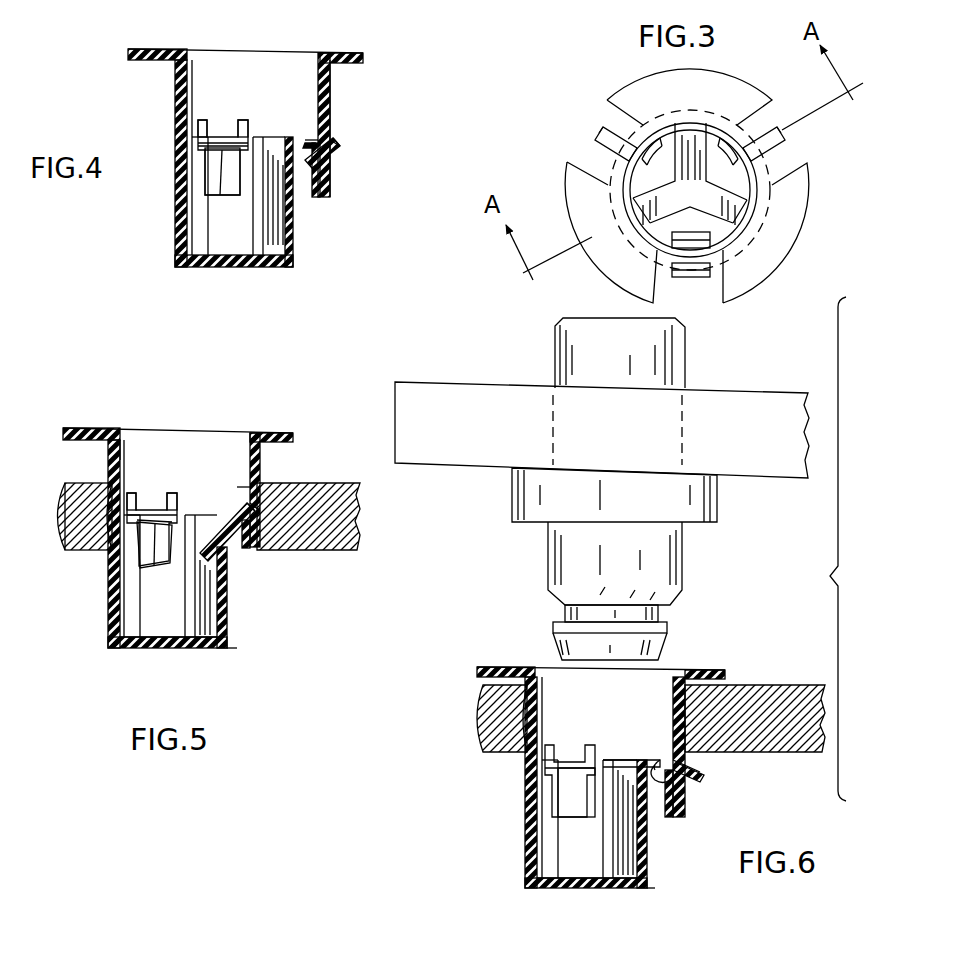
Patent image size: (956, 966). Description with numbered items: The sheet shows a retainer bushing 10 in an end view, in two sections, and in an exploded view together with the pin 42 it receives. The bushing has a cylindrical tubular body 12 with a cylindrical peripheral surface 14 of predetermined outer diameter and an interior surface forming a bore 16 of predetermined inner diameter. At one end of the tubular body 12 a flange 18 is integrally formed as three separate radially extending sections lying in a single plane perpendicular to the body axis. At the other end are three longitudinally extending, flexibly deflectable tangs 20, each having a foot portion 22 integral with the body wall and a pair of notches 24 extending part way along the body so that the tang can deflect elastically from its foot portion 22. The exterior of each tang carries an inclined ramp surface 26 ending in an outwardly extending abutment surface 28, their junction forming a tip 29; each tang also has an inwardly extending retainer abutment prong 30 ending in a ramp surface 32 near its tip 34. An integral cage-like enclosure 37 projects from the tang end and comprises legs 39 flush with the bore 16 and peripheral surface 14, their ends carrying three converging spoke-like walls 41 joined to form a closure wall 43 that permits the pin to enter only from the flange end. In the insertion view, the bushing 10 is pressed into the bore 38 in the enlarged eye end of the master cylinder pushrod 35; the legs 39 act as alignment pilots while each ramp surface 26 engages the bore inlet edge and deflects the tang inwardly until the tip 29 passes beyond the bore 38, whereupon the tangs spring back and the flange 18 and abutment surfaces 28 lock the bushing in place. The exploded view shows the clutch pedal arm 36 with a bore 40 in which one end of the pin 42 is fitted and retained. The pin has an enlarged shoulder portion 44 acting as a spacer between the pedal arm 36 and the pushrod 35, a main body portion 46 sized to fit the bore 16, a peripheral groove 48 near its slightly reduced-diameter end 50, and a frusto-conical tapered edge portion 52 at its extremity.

In FIG. 4, the retainer bushing 10 is at (314, 47).
In FIG. 3, the retainer bushing 10 is at (760, 80).
In FIG. 5, the retainer bushing 10 is at (223, 426).
In FIG. 6, the retainer bushing 10 is at (532, 660).
In FIG. 4, the cylindrical tubular body 12 is at (330, 87).
In FIG. 3, the cylindrical tubular body 12 is at (712, 278).
In FIG. 5, the cylindrical tubular body 12 is at (260, 457).
In FIG. 6, the cylindrical tubular body 12 is at (534, 750).
In FIG. 4, the cylindrical peripheral surface 14 is at (330, 105).
In FIG. 3, the cylindrical peripheral surface 14 is at (680, 276).
In FIG. 5, the cylindrical peripheral surface 14 is at (108, 458).
In FIG. 4, the bore 16 is at (196, 78).
In FIG. 3, the bore 16 is at (662, 118).
In FIG. 5, the bore 16 is at (123, 455).
In FIG. 6, the bore 16 is at (672, 688).
In FIG. 4, the flange 18 is at (161, 50).
In FIG. 3, the flange 18 is at (730, 64).
In FIG. 5, the flange 18 is at (95, 427).
In FIG. 6, the flange 18 is at (492, 667).
In FIG. 4, the tangs 20 is at (203, 197).
In FIG. 5, the tangs 20 is at (153, 562).
In FIG. 6, the tangs 20 is at (588, 817).
In FIG. 4, the foot portion 22 is at (217, 135).
In FIG. 6, the foot portion 22 is at (677, 720).
In FIG. 4, the notches 24 is at (206, 118).
In FIG. 5, the notches 24 is at (141, 493).
In FIG. 4, the inclined ramp surface 26 is at (333, 163).
In FIG. 5, the inclined ramp surface 26 is at (247, 540).
In FIG. 4, the abutment surface 28 is at (337, 144).
In FIG. 3, the abutment surface 28 is at (612, 150).
In FIG. 5, the abutment surface 28 is at (273, 543).
In FIG. 6, the abutment surface 28 is at (690, 758).
In FIG. 4, the tip 29 is at (340, 150).
In FIG. 3, the tip 29 is at (610, 137).
In FIG. 5, the tip 29 is at (257, 537).
In FIG. 6, the tip 29 is at (693, 768).
In FIG. 4, the retainer abutment prong 30 is at (310, 140).
In FIG. 3, the retainer abutment prong 30 is at (724, 161).
In FIG. 5, the retainer abutment prong 30 is at (237, 487).
In FIG. 6, the retainer abutment prong 30 is at (673, 763).
In FIG. 4, the ramp surface 32 is at (219, 170).
In FIG. 3, the ramp surface 32 is at (655, 159).
In FIG. 5, the ramp surface 32 is at (232, 507).
In FIG. 6, the ramp surface 32 is at (673, 783).
In FIG. 4, the tip 34 is at (233, 160).
In FIG. 5, the tip 34 is at (222, 520).
In FIG. 6, the tip 34 is at (576, 792).
In FIG. 5, the pushrod 35 is at (343, 513).
In FIG. 6, the pushrod 35 is at (788, 684).
In FIG. 6, the clutch pedal arm 36 is at (736, 394).
In FIG. 3, the cage-like enclosure 37 is at (627, 198).
In FIG. 5, the cage-like enclosure 37 is at (237, 652).
In FIG. 6, the cage-like enclosure 37 is at (652, 885).
In FIG. 5, the bore 38 is at (103, 520).
In FIG. 6, the bore 38 is at (540, 698).
In FIG. 4, the legs 39 is at (183, 244).
In FIG. 5, the legs 39 is at (105, 628).
In FIG. 6, the legs 39 is at (527, 860).
In FIG. 6, the bore 40 is at (565, 442).
In FIG. 4, the spoke-like walls 41 is at (223, 265).
In FIG. 3, the spoke-like walls 41 is at (698, 133).
In FIG. 5, the spoke-like walls 41 is at (160, 648).
In FIG. 6, the spoke-like walls 41 is at (578, 888).
In FIG. 6, the pin 42 is at (552, 358).
In FIG. 3, the closure wall 43 is at (735, 203).
In FIG. 5, the closure wall 43 is at (137, 652).
In FIG. 6, the closure wall 43 is at (610, 893).
In FIG. 6, the enlarged shoulder portion 44 is at (717, 497).
In FIG. 6, the main body portion 46 is at (672, 558).
In FIG. 6, the peripheral groove 48 is at (662, 612).
In FIG. 6, the end 50 is at (668, 628).
In FIG. 6, the tapered edge portion 52 is at (660, 648).